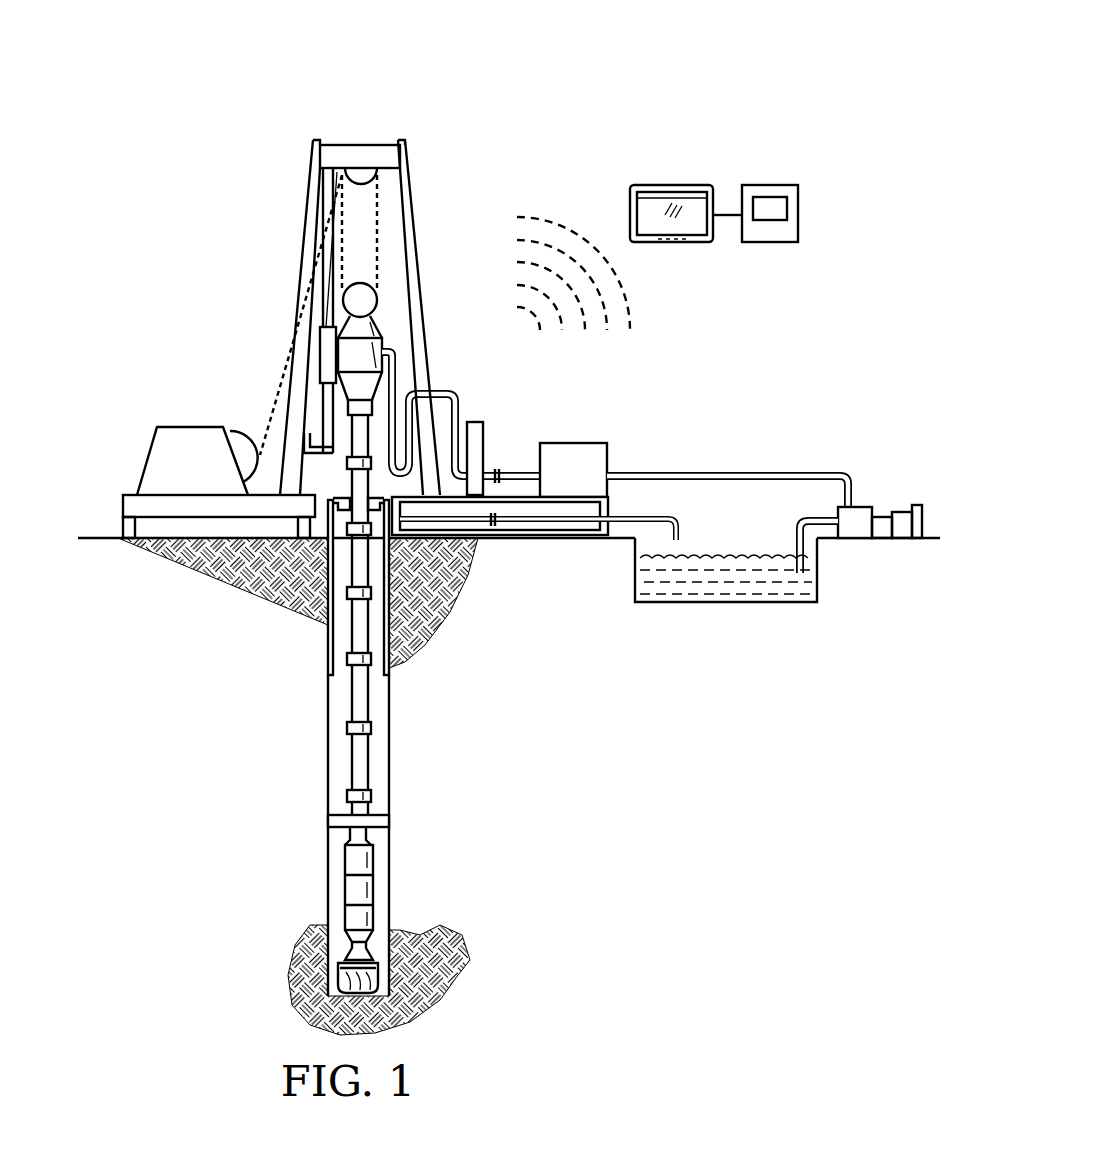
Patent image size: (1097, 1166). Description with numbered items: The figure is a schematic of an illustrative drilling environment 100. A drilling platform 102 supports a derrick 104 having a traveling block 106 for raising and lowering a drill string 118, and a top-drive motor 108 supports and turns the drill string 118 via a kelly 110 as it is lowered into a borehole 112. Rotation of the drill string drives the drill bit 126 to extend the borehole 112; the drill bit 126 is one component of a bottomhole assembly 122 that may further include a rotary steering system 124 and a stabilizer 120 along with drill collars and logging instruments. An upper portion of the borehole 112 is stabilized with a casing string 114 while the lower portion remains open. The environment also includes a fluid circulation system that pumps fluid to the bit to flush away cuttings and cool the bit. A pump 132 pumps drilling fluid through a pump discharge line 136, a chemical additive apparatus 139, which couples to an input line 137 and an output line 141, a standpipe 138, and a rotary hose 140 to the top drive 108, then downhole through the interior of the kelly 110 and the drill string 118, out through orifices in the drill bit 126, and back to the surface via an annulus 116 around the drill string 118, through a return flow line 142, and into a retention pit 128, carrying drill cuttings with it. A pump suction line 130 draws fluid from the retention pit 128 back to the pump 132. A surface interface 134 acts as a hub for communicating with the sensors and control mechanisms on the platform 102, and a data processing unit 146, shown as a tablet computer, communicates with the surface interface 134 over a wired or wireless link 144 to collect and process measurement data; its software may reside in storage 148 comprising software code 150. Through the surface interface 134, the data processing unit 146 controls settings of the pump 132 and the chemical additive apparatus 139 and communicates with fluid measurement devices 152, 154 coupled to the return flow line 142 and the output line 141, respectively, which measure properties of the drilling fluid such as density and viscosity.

The drilling environment 100 is at (800, 67).
The drilling platform 102 is at (122, 500).
The derrick 104 is at (305, 240).
The traveling block 106 is at (347, 300).
The top-drive motor 108 is at (320, 345).
The kelly 110 is at (355, 435).
The borehole 112 is at (447, 686).
The casing string 114 is at (326, 632).
The annulus 116 is at (335, 660).
The drill string 118 is at (360, 690).
The stabilizer 120 is at (330, 820).
The bottomhole assembly 122 is at (355, 835).
The rotary steering system 124 is at (355, 895).
The drill bit 126 is at (385, 963).
The retention pit 128 is at (817, 575).
The pump suction line 130 is at (796, 535).
The pump 132 is at (862, 507).
The surface interface 134 is at (478, 420).
The pump discharge line 136 is at (800, 472).
The input line 137 is at (630, 472).
The standpipe 138 is at (440, 395).
The chemical additive apparatus 139 is at (575, 443).
The rotary hose 140 is at (392, 370).
The output line 141 is at (530, 472).
The return flow line 142 is at (548, 524).
The wired or wireless link 144 is at (625, 292).
The data processing unit 146 is at (672, 185).
The storage 148 is at (774, 185).
The software code 150 is at (787, 202).
The fluid measurement device 152 is at (493, 524).
The fluid measurement device 154 is at (497, 470).